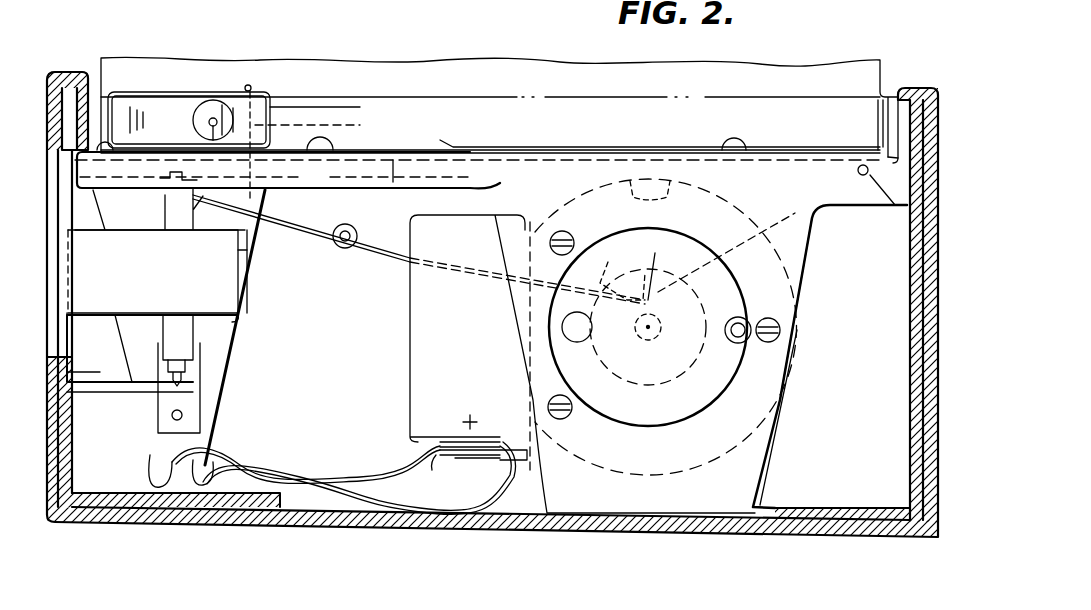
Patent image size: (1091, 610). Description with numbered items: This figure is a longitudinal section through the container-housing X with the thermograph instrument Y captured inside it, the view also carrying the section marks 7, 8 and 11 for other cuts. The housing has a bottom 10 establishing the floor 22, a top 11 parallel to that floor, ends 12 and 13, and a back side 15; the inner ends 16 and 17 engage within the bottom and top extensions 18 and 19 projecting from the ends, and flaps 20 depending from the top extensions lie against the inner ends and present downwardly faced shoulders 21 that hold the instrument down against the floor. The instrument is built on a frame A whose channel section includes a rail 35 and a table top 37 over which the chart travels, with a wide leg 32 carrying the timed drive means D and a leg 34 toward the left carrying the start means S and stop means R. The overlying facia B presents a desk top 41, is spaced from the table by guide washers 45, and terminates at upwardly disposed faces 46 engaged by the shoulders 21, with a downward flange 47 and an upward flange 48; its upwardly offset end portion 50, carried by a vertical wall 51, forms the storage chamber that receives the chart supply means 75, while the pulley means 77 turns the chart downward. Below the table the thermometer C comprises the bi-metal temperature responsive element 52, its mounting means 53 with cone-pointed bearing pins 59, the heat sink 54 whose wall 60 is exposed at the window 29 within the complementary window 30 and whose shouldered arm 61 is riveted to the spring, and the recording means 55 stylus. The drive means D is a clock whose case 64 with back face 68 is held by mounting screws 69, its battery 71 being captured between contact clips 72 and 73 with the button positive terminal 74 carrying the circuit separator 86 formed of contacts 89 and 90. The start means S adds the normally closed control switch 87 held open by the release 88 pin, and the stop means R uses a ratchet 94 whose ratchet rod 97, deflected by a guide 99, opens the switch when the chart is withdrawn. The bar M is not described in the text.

The section line 7- 7 is at (247, 563).
The section line 8- 8 is at (620, 45).
The bottom 10 is at (410, 512).
The top 11 is at (462, 68).
The end 12 is at (47, 93).
The end 13 is at (925, 462).
The side 15 is at (846, 426).
The inner end 16 is at (73, 444).
The inner end 17 is at (912, 380).
The bottom extension 18 is at (72, 72).
The top extension 19 is at (920, 88).
The flap 20 is at (101, 88).
The shoulder 21 is at (893, 196).
The floor 22 is at (497, 508).
The window 29 is at (68, 346).
The complementary window 30 is at (68, 373).
The leg 32 is at (665, 327).
The leg 34 is at (240, 360).
The rail 35 is at (429, 174).
The table top 37 is at (665, 155).
The desk top 41 is at (830, 150).
The guide washer 45 is at (753, 150).
The upwardly disposed face 46 is at (110, 146).
The flange 47 is at (152, 115).
The flange 48 is at (877, 125).
The upwardly offset end portion 50 is at (186, 91).
The vertical wall 51 is at (272, 108).
The temperature responsive element 52 is at (238, 270).
The mounting means 53 is at (170, 211).
The heat sink 54 is at (70, 303).
The recording means 55 is at (279, 254).
The bearing pin 59 is at (186, 373).
The wall 60 is at (52, 241).
The shouldered arm 61 is at (242, 322).
The case 64 is at (790, 385).
The back face 68 is at (648, 327).
The mounting screw 69 is at (574, 243).
The battery 71 is at (412, 362).
The contact clip 72 is at (496, 195).
The contact clip 73 is at (462, 462).
The positive terminal 74 is at (476, 440).
The chart supply means 75 is at (137, 98).
The pulley means 77 is at (856, 178).
The circuit separator 86 is at (437, 441).
The control switch 87 is at (209, 439).
The release 88 is at (290, 126).
The contact 89 is at (450, 440).
The contact 90 is at (428, 462).
The ratchet 94 is at (726, 252).
The ratchet rod 97 is at (622, 271).
The guide 99 is at (337, 254).
The frame A is at (803, 263).
The facia B is at (572, 130).
The thermometer C is at (118, 269).
The timed drive means D is at (795, 356).
The bar M is at (442, 139).
The stop means R is at (663, 265).
The start means S is at (253, 85).
The container-housing X is at (533, 60).
The instrument Y is at (805, 150).